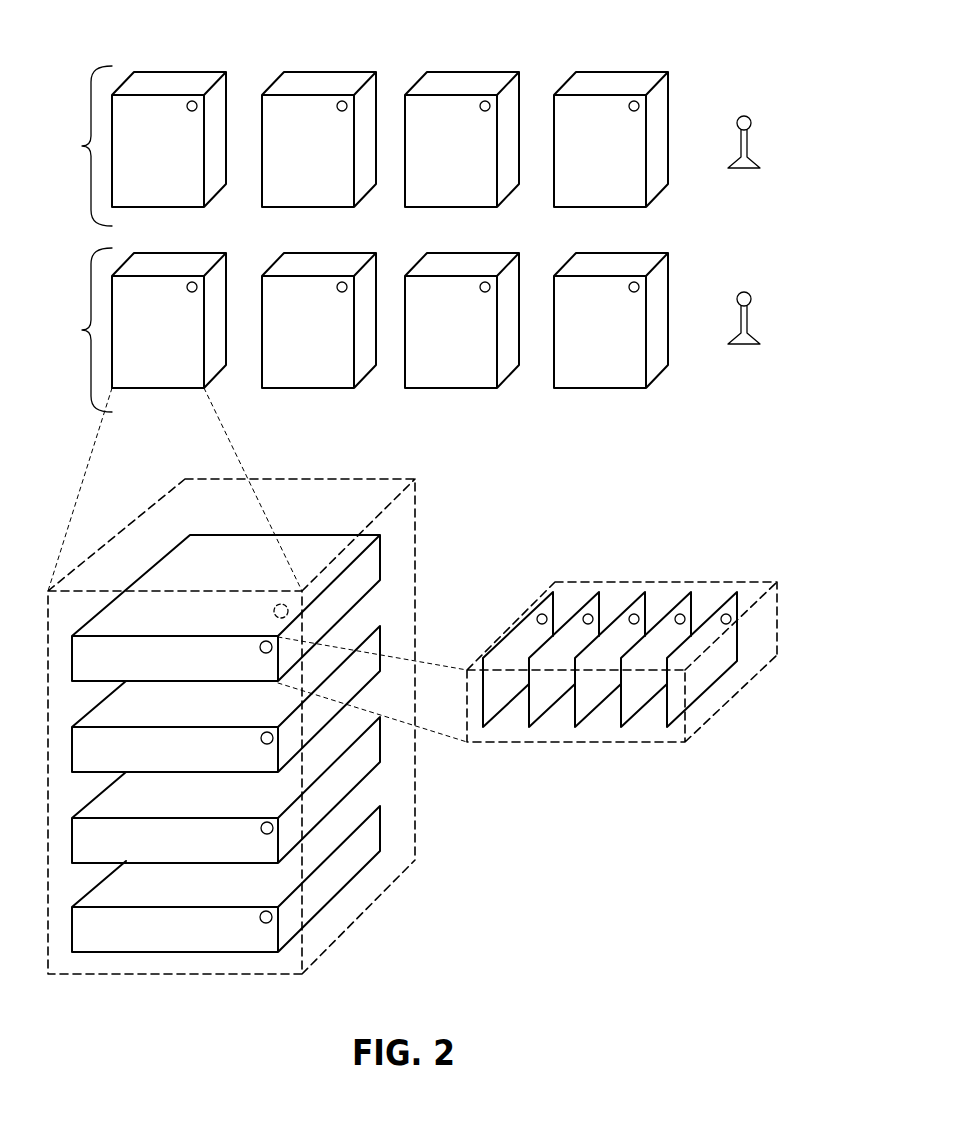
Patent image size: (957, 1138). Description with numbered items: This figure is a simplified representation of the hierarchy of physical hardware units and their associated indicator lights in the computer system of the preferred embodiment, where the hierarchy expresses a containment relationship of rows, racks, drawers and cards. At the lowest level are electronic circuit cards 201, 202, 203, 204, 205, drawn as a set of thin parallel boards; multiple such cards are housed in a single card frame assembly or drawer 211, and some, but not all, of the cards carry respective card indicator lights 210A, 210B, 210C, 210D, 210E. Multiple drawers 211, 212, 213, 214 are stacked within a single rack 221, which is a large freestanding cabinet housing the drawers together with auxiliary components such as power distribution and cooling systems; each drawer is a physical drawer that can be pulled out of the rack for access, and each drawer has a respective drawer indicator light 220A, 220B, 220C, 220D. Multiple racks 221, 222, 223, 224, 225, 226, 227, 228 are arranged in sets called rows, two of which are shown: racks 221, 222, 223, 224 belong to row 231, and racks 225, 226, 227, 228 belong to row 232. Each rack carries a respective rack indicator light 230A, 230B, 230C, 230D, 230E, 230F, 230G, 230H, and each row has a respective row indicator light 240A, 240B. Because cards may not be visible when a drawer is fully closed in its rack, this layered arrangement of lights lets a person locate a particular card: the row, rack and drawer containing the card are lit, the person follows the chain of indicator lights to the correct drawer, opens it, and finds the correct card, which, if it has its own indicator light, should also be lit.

The electronic circuit card 201 is at (527, 669).
The electronic circuit card 202 is at (573, 669).
The electronic circuit card 203 is at (619, 669).
The electronic circuit card 204 is at (665, 669).
The electronic circuit card 205 is at (711, 669).
The card indicator light 210A is at (538, 614).
The card indicator light 210B is at (586, 614).
The card indicator light 210C is at (632, 614).
The card indicator light 210D is at (677, 614).
The card indicator light 210E is at (724, 614).
The card frame assembly (drawer) 211 is at (143, 669).
The drawer 212 is at (143, 760).
The drawer 213 is at (143, 851).
The drawer 214 is at (143, 940).
The drawer indicator light 220A is at (271, 652).
The drawer indicator light 220B is at (272, 742).
The drawer indicator light 220C is at (271, 833).
The drawer indicator light 220D is at (268, 923).
The rack 221 is at (175, 339).
The rack 222 is at (325, 339).
The rack 223 is at (468, 339).
The rack 224 is at (617, 339).
The rack 225 is at (175, 157).
The rack 226 is at (325, 157).
The rack 227 is at (468, 157).
The rack 228 is at (617, 157).
The rack indicator light 230A is at (192, 281).
The rack indicator light 230B is at (342, 281).
The rack indicator light 230C is at (485, 281).
The rack indicator light 230D is at (634, 281).
The rack indicator light 230E is at (192, 100).
The rack indicator light 230F is at (342, 100).
The rack indicator light 230G is at (485, 100).
The rack indicator light 230H is at (634, 100).
The row 231 is at (80, 330).
The row 232 is at (80, 146).
The row indicator light 240A is at (741, 293).
The row indicator light 240B is at (741, 117).